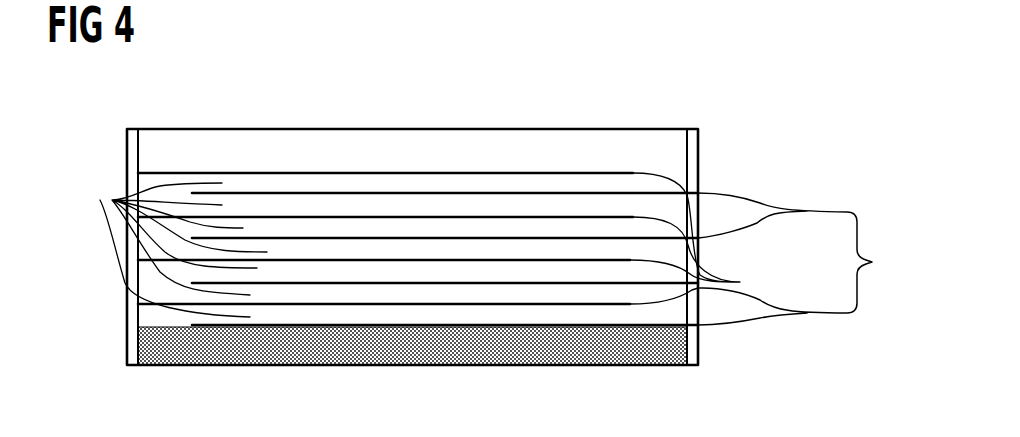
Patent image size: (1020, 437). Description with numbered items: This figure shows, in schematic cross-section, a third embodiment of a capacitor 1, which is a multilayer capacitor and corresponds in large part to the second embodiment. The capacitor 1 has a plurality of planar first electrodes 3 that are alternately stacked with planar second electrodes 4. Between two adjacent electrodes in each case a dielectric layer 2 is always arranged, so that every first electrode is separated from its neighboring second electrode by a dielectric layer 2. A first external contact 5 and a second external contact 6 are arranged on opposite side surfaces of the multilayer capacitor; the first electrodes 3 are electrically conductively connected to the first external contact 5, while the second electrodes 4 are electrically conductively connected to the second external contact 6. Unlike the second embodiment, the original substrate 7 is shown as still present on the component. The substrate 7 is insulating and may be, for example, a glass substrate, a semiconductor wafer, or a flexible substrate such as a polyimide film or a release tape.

The capacitor 1 is at (732, 111).
The dielectric layer 2 is at (112, 200).
The first electrodes 3 is at (544, 259).
The second electrodes 4 is at (698, 283).
The first external contact 5 is at (693, 143).
The second external contact 6 is at (133, 171).
The substrate 7 is at (483, 348).